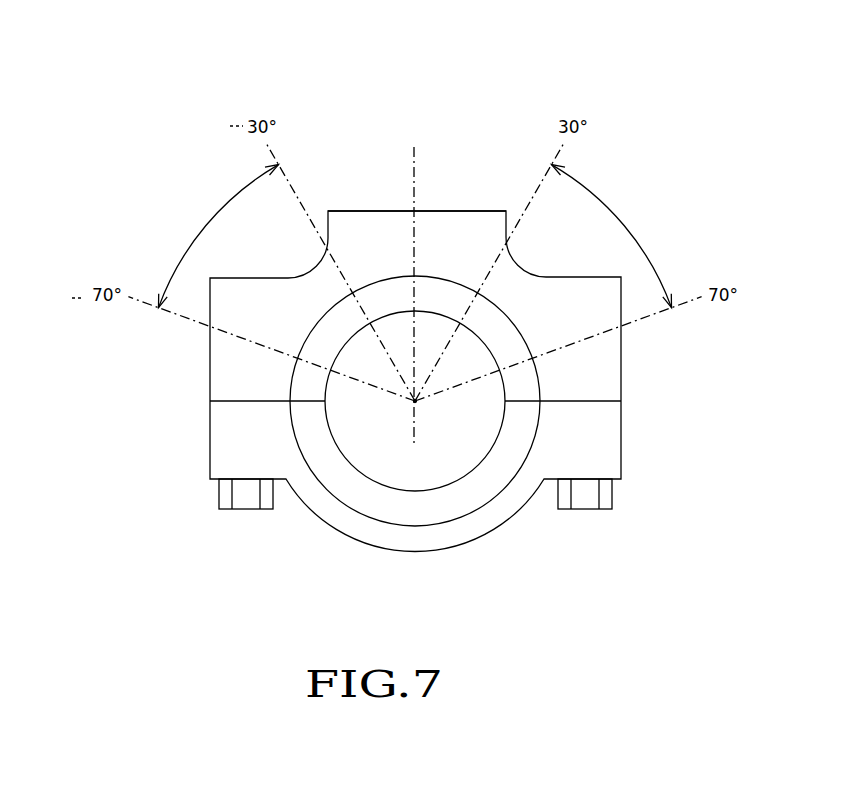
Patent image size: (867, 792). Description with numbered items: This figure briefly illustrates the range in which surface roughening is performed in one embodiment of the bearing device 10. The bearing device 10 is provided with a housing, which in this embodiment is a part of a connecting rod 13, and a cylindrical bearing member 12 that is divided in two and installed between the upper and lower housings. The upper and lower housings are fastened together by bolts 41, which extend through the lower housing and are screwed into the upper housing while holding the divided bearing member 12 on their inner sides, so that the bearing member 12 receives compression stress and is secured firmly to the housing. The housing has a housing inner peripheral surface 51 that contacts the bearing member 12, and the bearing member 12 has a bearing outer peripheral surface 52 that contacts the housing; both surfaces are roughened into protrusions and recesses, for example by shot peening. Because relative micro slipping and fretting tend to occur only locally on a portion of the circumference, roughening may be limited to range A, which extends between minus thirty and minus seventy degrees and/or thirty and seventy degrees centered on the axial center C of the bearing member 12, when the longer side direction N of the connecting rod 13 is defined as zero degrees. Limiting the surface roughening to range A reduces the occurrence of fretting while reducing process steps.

The bearing device 10 is at (446, 373).
The bearing member 12 is at (275, 422).
The connecting rod 13 is at (472, 211).
The bolts 41 is at (247, 511).
The housing inner peripheral surface 51 is at (300, 368).
The bearing outer peripheral surface 52 is at (543, 377).
The range A is at (205, 217).
The axial center C is at (415, 401).
The longer side direction N is at (414, 30).